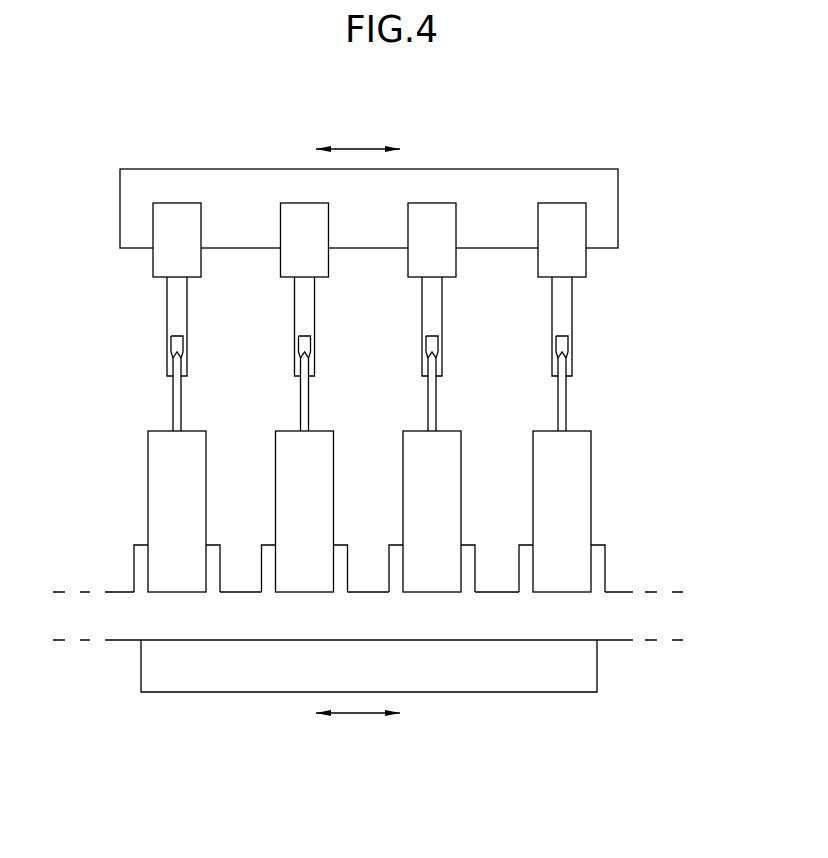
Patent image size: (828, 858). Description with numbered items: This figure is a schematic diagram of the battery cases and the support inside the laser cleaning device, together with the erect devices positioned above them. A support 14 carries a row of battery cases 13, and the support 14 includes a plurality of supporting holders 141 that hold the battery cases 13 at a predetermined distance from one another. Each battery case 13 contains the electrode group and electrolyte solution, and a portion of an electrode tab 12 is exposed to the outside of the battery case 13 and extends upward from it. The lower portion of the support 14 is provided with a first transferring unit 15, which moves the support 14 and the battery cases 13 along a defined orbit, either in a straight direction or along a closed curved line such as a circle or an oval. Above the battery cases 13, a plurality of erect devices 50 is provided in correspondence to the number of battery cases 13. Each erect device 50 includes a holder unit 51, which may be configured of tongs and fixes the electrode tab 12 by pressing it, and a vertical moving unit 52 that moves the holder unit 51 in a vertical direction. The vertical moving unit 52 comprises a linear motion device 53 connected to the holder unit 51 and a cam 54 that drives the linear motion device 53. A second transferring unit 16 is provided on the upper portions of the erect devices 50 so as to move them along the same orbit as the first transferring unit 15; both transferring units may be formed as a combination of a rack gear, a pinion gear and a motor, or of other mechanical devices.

The second transferring unit 16 is at (500, 192).
The erect device 50 is at (370, 286).
The vertical moving unit 52 is at (370, 289).
The cam 54 is at (168, 263).
The linear motion device 53 is at (172, 303).
The holder unit 51 is at (168, 368).
The electrode tab 12 is at (177, 410).
The battery case 13 is at (163, 478).
The supporting holder 141 is at (140, 563).
The support 14 is at (498, 623).
The first transferring unit 15 is at (558, 672).